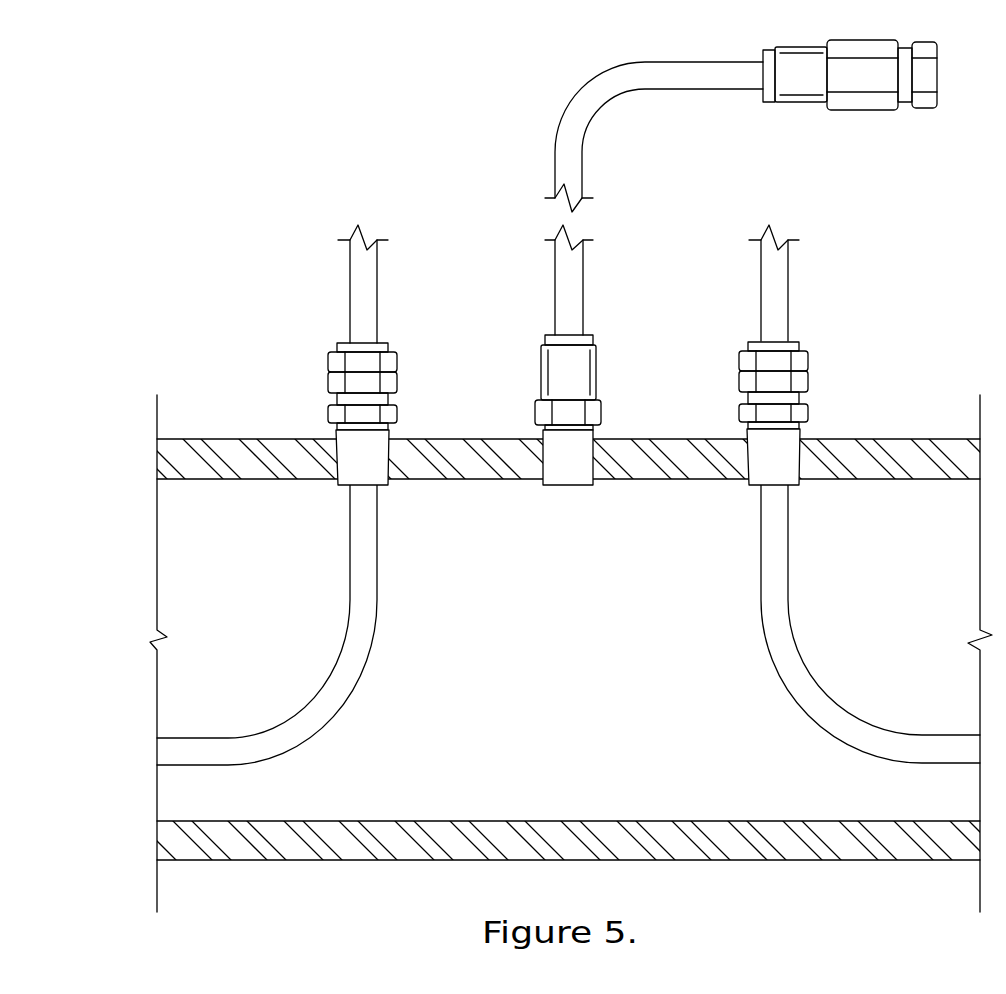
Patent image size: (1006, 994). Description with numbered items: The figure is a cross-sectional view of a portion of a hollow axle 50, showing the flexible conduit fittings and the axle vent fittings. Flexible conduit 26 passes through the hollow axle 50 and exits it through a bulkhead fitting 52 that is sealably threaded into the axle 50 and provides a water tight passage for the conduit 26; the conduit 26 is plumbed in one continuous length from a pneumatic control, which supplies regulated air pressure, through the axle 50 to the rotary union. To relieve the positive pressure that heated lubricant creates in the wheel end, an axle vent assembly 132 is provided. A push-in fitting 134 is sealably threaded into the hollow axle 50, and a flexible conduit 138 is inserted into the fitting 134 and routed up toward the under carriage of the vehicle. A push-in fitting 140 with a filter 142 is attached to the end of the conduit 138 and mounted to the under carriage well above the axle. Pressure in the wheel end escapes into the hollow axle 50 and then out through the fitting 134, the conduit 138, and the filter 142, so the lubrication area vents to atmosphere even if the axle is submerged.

The flexible conduit 26 is at (377, 292).
The hollow axle 50 is at (569, 820).
The bulkhead fitting 52 is at (328, 383).
The axle vent assembly 132 is at (496, 163).
The push-in fitting 134 is at (597, 373).
The flexible conduit 138 is at (590, 133).
The push-in fitting 140 is at (803, 103).
The filter 142 is at (924, 110).